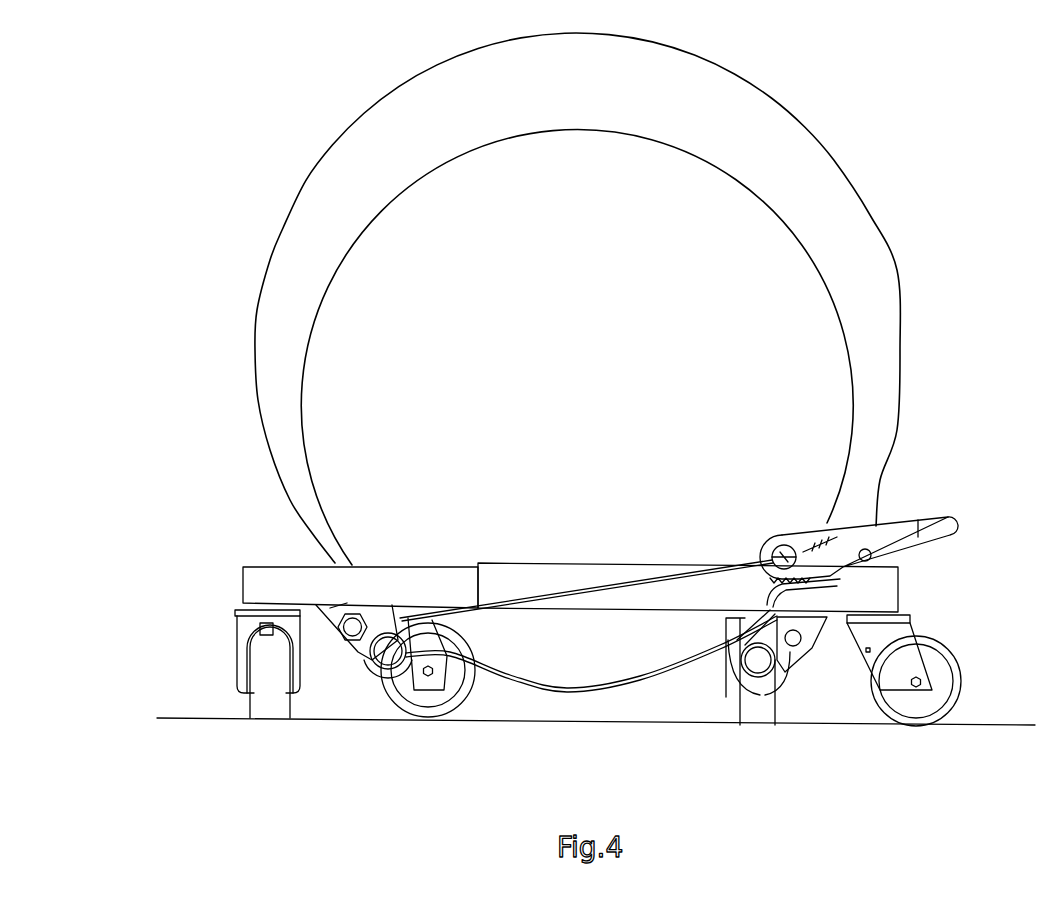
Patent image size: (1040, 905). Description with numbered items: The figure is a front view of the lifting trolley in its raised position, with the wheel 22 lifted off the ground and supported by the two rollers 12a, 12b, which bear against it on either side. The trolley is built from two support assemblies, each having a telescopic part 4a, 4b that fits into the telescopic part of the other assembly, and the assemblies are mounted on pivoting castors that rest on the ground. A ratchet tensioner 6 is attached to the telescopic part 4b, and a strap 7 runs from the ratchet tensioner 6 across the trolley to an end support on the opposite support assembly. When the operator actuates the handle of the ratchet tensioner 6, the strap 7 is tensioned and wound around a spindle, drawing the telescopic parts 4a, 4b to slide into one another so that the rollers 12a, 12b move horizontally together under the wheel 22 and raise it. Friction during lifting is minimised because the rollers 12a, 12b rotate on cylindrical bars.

The wheel 22 is at (852, 365).
The telescopic part 4a is at (263, 571).
The telescopic part 4b is at (890, 577).
The ratchet tensioner 6 is at (960, 520).
The strap 7 is at (560, 593).
The roller 12a is at (378, 690).
The roller 12b is at (772, 693).